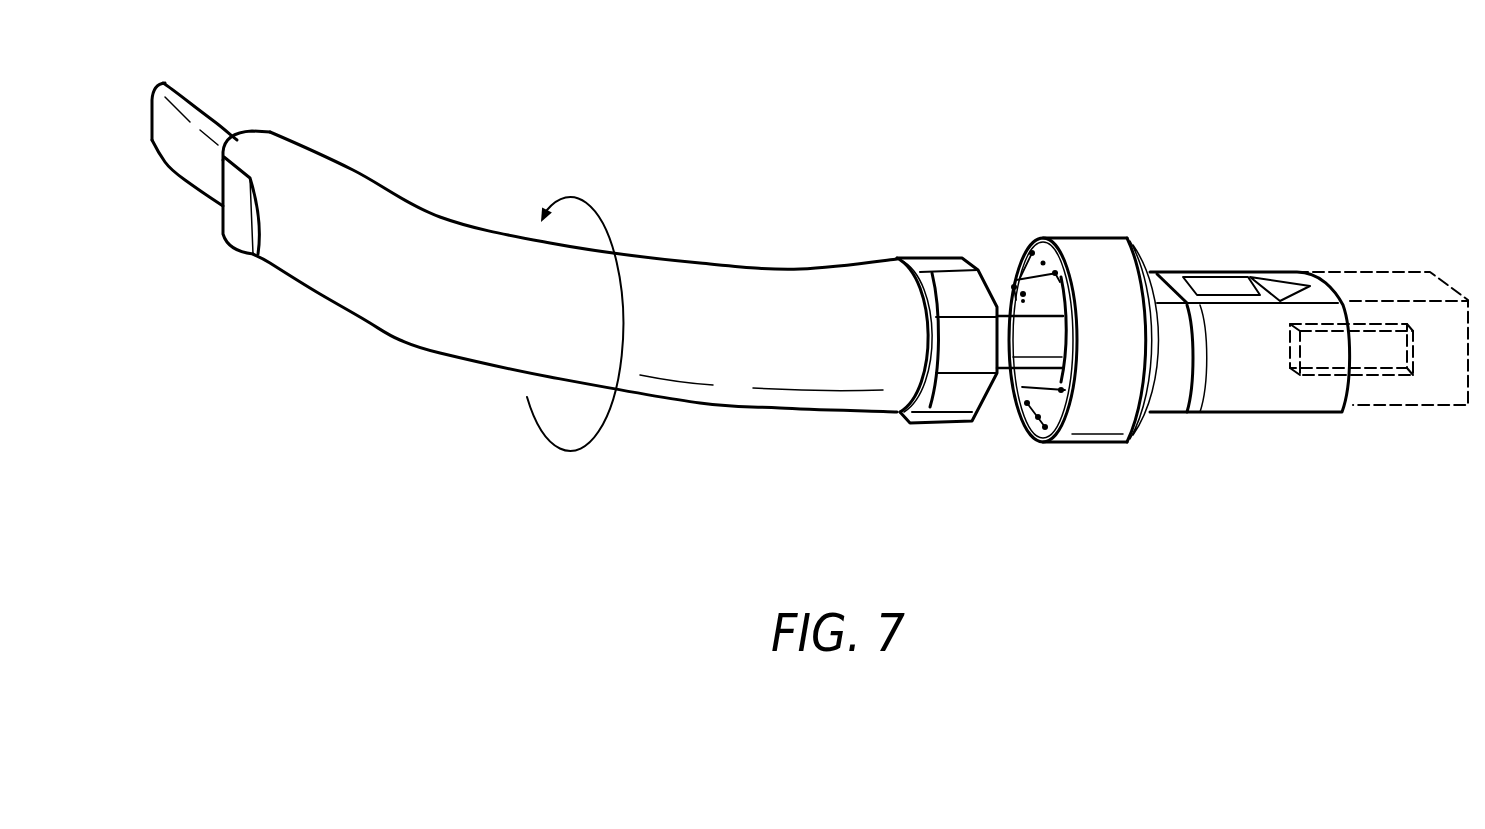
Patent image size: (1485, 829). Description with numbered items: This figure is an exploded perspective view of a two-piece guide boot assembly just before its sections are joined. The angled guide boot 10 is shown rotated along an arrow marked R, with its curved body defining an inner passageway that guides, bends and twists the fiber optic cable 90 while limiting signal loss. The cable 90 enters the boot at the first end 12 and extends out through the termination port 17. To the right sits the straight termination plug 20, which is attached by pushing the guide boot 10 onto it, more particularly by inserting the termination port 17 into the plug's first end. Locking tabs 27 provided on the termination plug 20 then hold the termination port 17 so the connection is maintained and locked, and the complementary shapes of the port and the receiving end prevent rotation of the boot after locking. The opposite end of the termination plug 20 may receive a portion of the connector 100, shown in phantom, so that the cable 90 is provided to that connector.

The guide boot 10 is at (731, 393).
The first end 12 is at (235, 195).
The termination port 17 is at (922, 263).
The termination plug 20 is at (1143, 268).
The locking tabs 27 is at (1013, 285).
The fiber optic cable 90 is at (170, 92).
The connector 100 is at (1422, 395).